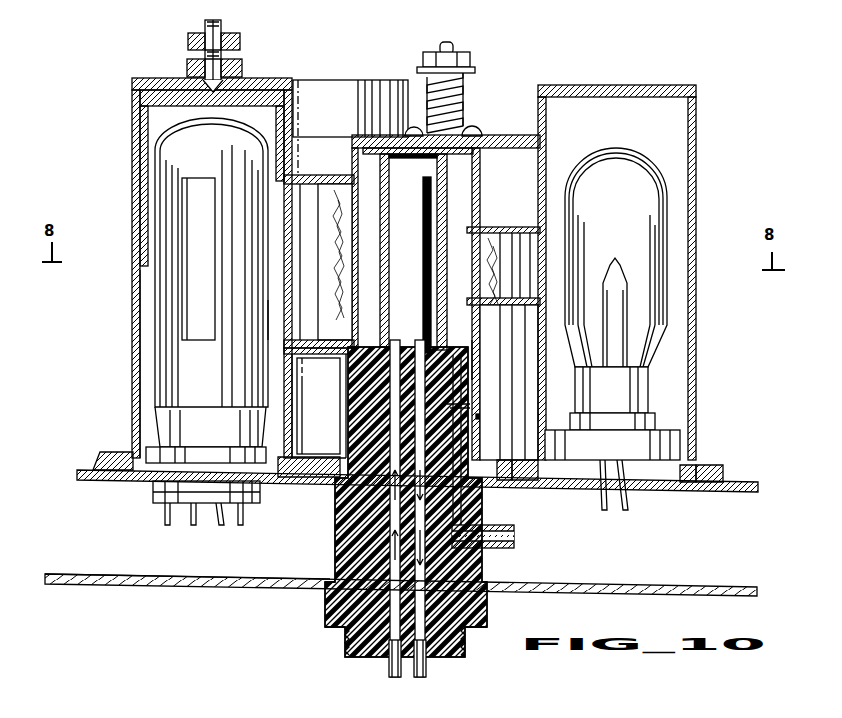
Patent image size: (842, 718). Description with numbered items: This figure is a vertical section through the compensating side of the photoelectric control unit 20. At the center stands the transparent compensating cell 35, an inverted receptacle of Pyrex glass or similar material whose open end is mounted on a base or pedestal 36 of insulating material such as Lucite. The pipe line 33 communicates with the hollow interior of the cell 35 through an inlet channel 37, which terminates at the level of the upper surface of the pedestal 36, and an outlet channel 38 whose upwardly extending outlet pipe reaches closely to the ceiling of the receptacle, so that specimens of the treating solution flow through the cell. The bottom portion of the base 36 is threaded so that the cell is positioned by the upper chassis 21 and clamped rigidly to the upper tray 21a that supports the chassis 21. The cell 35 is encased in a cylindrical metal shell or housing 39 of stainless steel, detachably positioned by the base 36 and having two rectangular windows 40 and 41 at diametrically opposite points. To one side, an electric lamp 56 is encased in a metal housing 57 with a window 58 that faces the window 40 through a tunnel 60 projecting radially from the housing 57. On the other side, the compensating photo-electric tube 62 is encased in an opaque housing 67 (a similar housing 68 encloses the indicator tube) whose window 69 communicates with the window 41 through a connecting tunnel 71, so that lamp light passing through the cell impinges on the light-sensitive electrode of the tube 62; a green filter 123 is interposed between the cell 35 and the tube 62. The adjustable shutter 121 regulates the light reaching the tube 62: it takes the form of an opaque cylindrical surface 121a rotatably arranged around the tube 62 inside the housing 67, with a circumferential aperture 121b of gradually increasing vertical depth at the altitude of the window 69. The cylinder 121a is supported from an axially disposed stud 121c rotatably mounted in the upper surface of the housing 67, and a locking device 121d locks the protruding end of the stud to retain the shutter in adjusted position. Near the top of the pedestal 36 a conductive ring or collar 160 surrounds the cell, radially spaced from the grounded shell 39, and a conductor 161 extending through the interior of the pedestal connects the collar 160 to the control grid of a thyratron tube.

The control unit 20 is at (70, 575).
The upper chassis 21 is at (748, 482).
The upper tray 21a is at (743, 558).
The pipe line 33 is at (417, 678).
The compensating cell 35 is at (432, 203).
The base or pedestal 36 is at (334, 543).
The inlet channel 37 is at (384, 658).
The outlet channel 38 is at (426, 210).
The cylindrical metal shell or housing 39 is at (471, 358).
The rectangular window 40 is at (481, 234).
The rectangular window 41 is at (358, 253).
The electric lamp 56 is at (647, 203).
The housing 57 is at (691, 266).
The window 58 is at (548, 254).
The tunnel 60 is at (499, 293).
The photo-electric tube (compensating tube) 62 is at (197, 140).
The housing 67 is at (134, 290).
The housing 68 is at (328, 107).
The window 69 is at (175, 239).
The connecting tunnel 71 is at (323, 350).
The adjustable shutter 121 is at (138, 175).
The cylindrical surface 121a is at (146, 119).
The aperture or excision 121b is at (200, 232).
The stud 121c is at (214, 33).
The locking device 121d is at (192, 62).
The green filter 123 is at (288, 318).
The ring or collar 160 is at (350, 367).
The conductor 161 is at (457, 449).